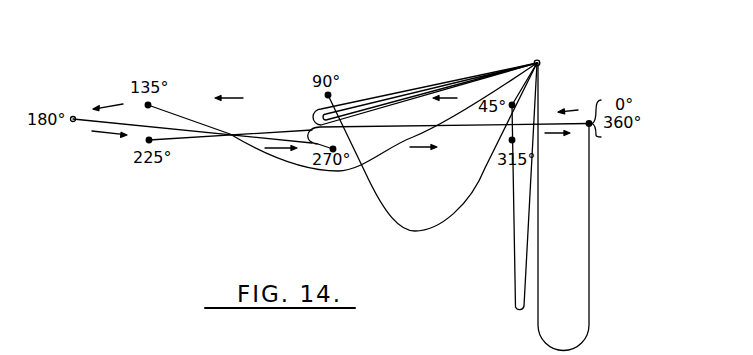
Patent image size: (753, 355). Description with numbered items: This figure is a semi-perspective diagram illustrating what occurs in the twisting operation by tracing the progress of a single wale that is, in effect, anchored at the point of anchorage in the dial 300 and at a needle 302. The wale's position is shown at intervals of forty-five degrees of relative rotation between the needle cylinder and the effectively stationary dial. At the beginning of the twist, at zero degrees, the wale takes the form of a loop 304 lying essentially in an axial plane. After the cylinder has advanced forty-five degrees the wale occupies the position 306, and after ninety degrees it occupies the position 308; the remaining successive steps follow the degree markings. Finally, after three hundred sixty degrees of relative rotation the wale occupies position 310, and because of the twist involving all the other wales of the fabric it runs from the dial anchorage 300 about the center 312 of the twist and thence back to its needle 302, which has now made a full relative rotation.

The point of anchorage in the dial 300 is at (541, 62).
The needle 302 is at (587, 120).
The loop 304 is at (587, 335).
The wale position after forty-five degrees 306 is at (514, 247).
The wale position after ninety degrees 308 is at (427, 235).
The wale position after three hundred sixty degrees 310 is at (544, 120).
The center of the twist 312 is at (301, 106).